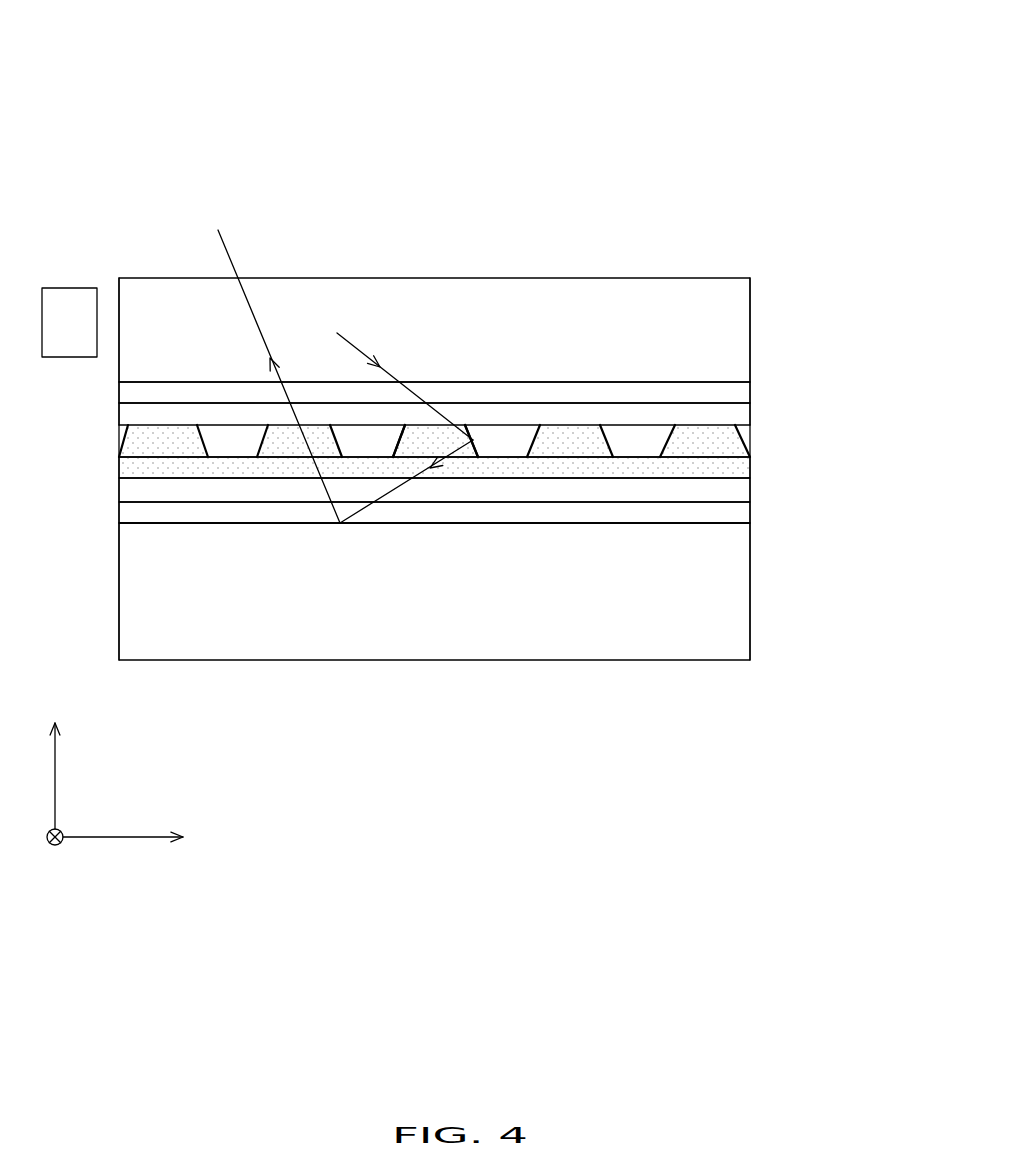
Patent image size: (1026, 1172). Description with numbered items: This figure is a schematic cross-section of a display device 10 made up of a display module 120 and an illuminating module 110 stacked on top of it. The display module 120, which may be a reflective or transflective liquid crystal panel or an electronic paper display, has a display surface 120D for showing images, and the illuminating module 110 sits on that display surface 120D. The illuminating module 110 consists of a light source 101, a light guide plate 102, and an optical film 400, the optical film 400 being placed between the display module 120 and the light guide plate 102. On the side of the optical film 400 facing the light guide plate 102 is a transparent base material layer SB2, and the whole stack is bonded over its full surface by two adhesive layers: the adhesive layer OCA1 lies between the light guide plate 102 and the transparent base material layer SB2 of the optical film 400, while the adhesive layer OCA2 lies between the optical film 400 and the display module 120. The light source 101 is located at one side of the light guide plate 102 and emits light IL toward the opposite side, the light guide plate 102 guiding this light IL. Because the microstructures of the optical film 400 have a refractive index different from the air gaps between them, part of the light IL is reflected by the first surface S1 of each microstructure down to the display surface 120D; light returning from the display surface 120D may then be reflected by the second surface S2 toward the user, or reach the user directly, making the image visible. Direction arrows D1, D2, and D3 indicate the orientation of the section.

The display device 10 is at (797, 836).
The illuminating module 110 is at (137, 28).
The light source 101 is at (68, 348).
The light guide plate 102 is at (732, 318).
The optical film 400 is at (525, 314).
The adhesive layer OCA1 is at (740, 393).
The transparent base material layer SB2 is at (740, 413).
The adhesive layer OCA2 is at (740, 512).
The display surface 120D is at (720, 525).
The display module 120 is at (735, 608).
The light IL is at (392, 373).
The first surface S1 is at (473, 440).
The second surface S2 is at (395, 442).
The first direction D1 is at (144, 841).
The second direction D2 is at (55, 857).
The third direction D3 is at (53, 761).